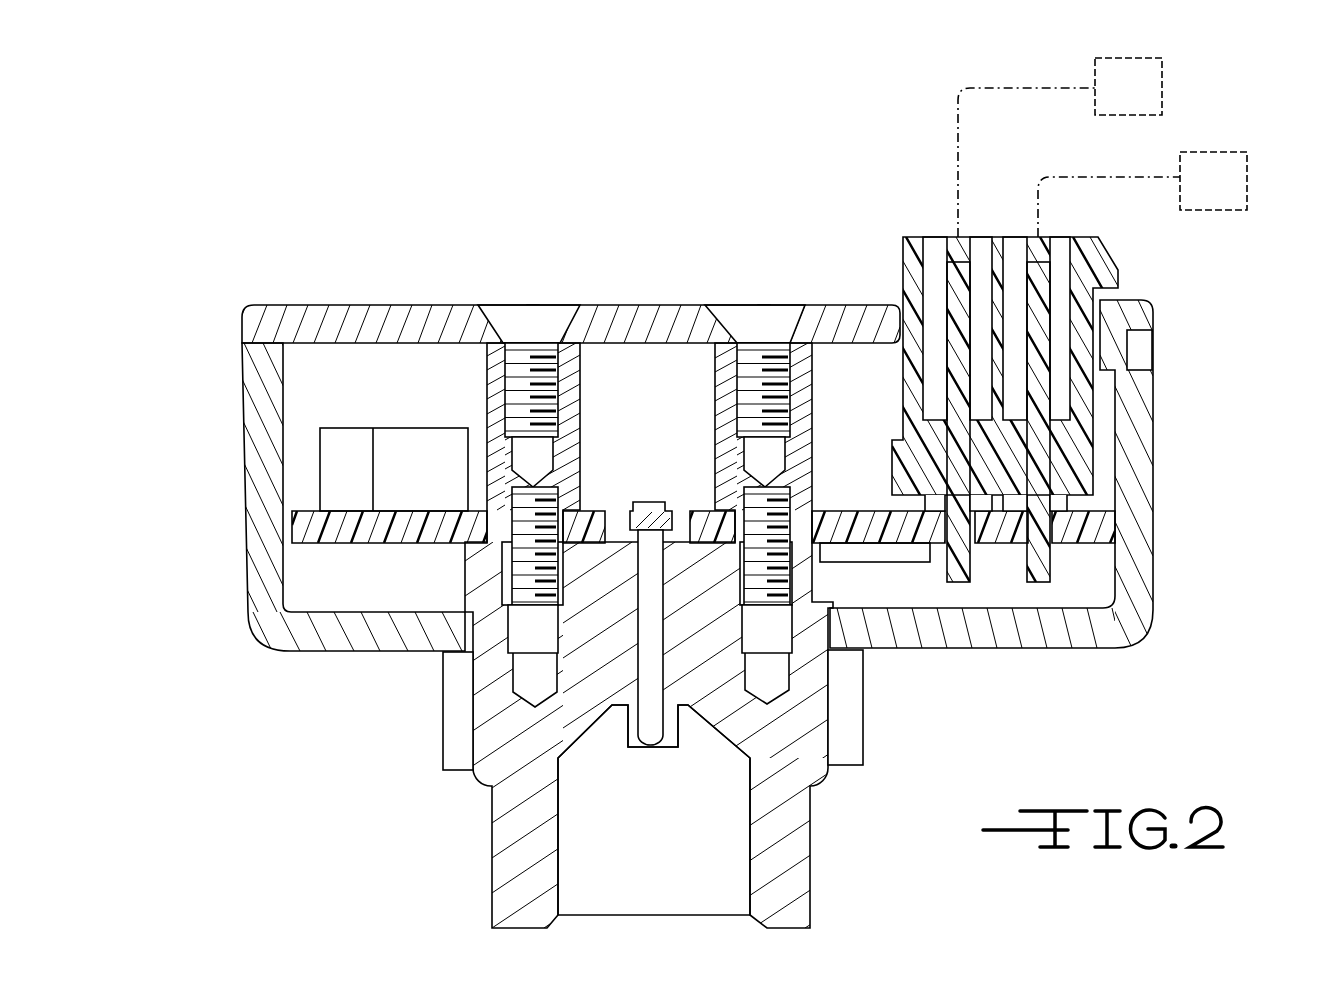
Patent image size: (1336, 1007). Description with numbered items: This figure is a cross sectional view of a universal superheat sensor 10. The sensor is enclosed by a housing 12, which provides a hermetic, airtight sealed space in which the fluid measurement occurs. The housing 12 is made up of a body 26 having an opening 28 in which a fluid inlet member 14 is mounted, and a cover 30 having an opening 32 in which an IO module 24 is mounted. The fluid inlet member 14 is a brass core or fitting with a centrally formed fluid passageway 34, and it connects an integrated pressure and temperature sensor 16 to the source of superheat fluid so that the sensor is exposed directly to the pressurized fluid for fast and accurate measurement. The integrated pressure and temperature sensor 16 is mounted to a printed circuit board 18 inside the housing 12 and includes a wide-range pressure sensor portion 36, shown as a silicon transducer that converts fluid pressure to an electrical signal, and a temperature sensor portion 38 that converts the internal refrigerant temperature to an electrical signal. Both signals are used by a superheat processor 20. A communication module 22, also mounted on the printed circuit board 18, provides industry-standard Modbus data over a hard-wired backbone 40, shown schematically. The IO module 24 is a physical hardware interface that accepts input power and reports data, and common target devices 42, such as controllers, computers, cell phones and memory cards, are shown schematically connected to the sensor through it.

The universal superheat sensor 10 is at (217, 289).
The housing 12 is at (246, 515).
The fluid inlet member 14 is at (510, 851).
The integrated pressure and temperature sensor 16 is at (655, 502).
The printed circuit board 18 is at (1115, 521).
The superheat processor 20 is at (340, 458).
The communication module 22 is at (905, 548).
The IO module 24 is at (1112, 248).
The body 26 is at (1150, 637).
The opening 28 is at (825, 628).
The cover 30 is at (352, 304).
The opening 32 is at (903, 263).
The fluid passageway 34 is at (653, 723).
The pressure sensor portion 36 is at (630, 505).
The temperature sensor portion 38 is at (673, 505).
The hard-wired backbone 40 is at (956, 100).
The target devices 42 is at (1162, 88).